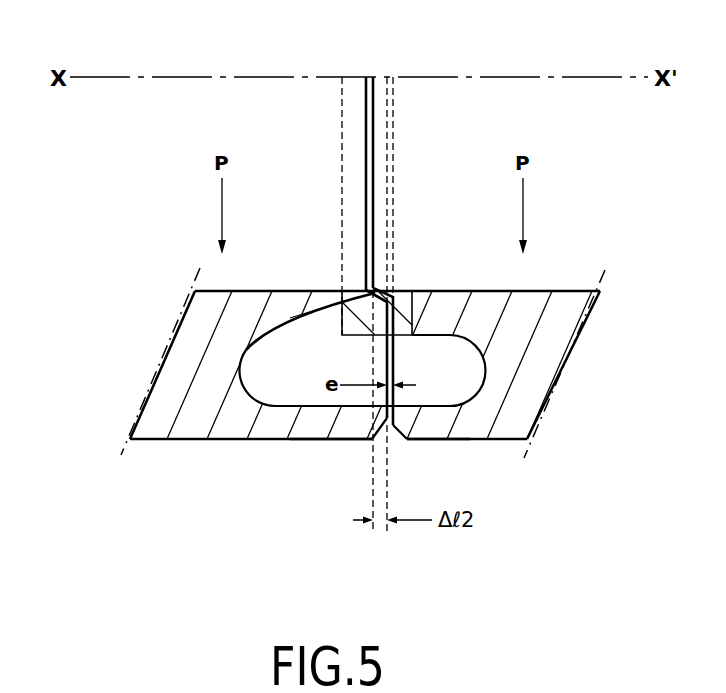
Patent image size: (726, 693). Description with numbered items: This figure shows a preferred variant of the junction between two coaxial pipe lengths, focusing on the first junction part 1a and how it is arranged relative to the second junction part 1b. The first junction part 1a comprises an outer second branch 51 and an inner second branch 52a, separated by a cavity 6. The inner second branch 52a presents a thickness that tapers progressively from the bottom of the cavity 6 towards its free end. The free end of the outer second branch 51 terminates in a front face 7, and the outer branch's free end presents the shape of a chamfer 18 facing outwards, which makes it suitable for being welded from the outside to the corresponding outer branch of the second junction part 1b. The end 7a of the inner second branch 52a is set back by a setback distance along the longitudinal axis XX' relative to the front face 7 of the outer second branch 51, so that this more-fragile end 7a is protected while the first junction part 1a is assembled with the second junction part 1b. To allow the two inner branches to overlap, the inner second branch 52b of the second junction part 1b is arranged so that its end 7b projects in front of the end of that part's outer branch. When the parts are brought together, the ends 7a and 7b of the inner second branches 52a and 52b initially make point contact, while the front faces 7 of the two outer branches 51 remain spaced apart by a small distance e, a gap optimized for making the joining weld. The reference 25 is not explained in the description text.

The first junction part 1a is at (212, 462).
The second junction part 1b is at (505, 462).
The cavity 6 is at (448, 374).
The front face 7 is at (408, 444).
The end of inner second branch of first junction part 7a is at (372, 291).
The end of inner second branch of second junction part 7b is at (338, 327).
The chamfer 18 is at (383, 443).
The cutting tool 25 is at (468, 180).
The outer second branch 51 is at (320, 442).
The inner second branch of first junction part 52a is at (340, 291).
The inner second branch of second junction part 52b is at (412, 318).